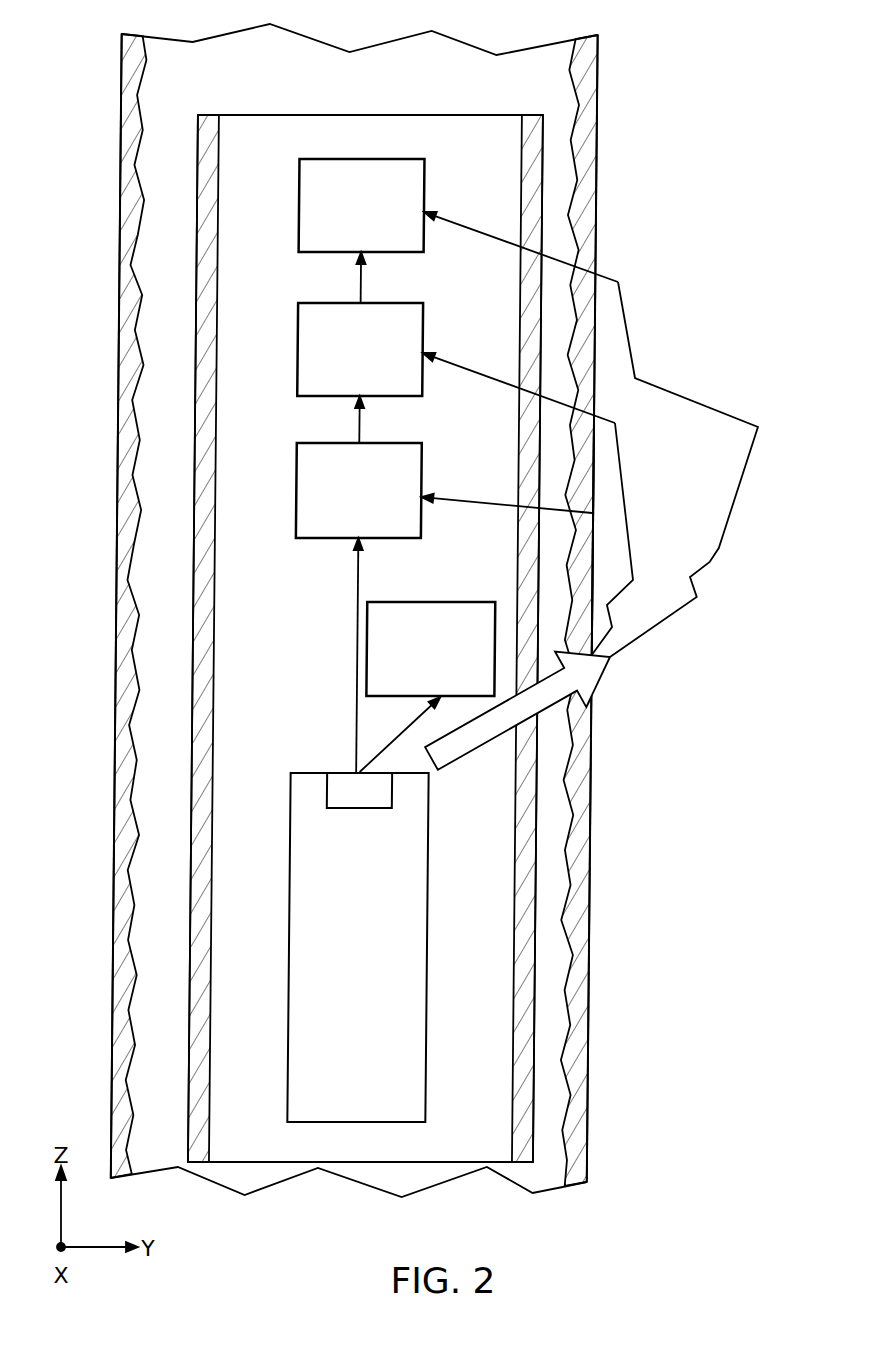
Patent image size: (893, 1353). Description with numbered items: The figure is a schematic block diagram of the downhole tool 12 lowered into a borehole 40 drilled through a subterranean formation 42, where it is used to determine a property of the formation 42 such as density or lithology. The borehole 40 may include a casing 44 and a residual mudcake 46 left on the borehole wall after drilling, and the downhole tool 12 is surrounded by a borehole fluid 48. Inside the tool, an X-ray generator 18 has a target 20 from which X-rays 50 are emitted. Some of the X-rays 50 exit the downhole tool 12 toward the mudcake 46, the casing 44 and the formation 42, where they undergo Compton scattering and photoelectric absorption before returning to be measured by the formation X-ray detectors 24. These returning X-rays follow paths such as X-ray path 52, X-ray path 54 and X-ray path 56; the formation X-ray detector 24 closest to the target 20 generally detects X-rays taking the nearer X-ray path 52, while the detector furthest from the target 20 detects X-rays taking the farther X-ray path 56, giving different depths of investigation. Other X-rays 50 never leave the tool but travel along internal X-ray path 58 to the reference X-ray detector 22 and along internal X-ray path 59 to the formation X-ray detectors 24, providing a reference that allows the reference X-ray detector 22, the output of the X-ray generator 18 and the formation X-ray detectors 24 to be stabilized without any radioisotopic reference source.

The downhole tool 12 is at (365, 623).
The X-ray generator 18 is at (437, 965).
The target 20 is at (356, 808).
The reference X-ray detector 22 is at (471, 601).
The formation X-ray detectors 24 is at (301, 208).
The borehole 40 is at (603, 52).
The formation 42 is at (693, 99).
The casing 44 is at (598, 193).
The residual mudcake 46 is at (592, 120).
The borehole fluid 48 is at (152, 226).
The X-rays 50 is at (598, 692).
The X-ray path 52 is at (598, 540).
The X-ray path 54 is at (627, 480).
The X-ray path 56 is at (664, 386).
The internal X-ray path 58 is at (417, 724).
The internal X-ray path 59 is at (364, 288).